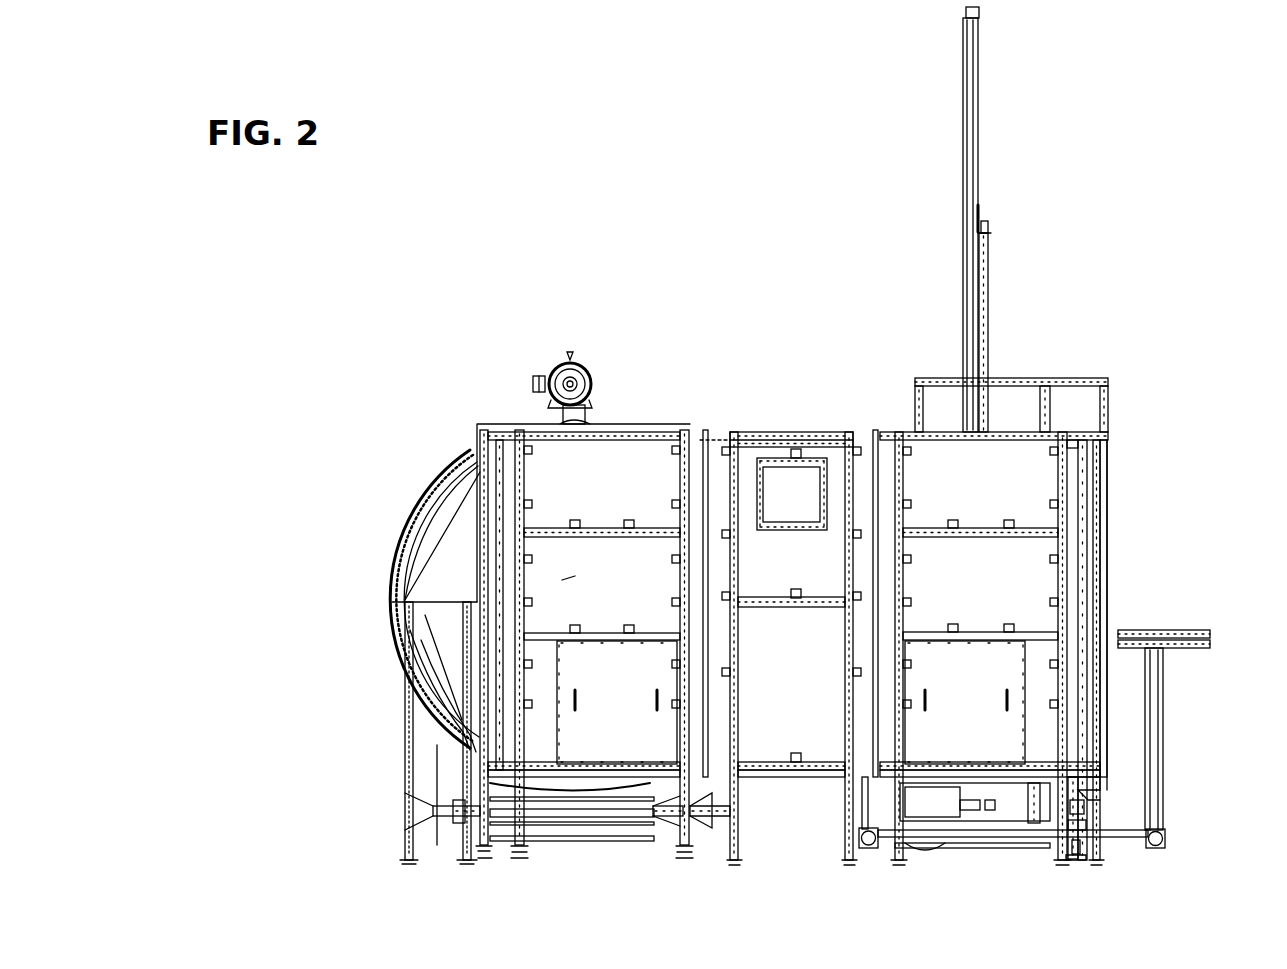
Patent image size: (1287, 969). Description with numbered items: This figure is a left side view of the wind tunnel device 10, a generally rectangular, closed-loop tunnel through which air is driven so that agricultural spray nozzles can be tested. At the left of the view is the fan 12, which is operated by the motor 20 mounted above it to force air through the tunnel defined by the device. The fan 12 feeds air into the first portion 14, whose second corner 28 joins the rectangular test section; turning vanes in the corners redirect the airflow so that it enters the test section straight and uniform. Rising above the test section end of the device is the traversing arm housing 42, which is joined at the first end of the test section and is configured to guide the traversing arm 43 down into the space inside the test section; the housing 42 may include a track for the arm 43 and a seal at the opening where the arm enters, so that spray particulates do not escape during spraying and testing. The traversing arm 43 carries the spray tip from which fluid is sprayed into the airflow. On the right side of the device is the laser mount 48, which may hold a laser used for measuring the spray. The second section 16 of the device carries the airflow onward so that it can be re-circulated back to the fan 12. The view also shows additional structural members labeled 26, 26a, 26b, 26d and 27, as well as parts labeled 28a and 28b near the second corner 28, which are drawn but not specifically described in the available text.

The wind tunnel device 10 is at (593, 203).
The fan 12 is at (386, 490).
The first portion 14 is at (789, 383).
The second section 16 is at (1135, 579).
The motor 20 is at (577, 362).
The left frame 26 is at (622, 433).
The inner column of left frame 26a is at (515, 433).
The lower sub-frame of left frame 26b is at (552, 765).
The diagonal brace 26d is at (587, 571).
The middle frame 27 is at (773, 752).
The second corner 28 is at (1086, 478).
The top box of right frame 28a is at (1052, 430).
The lower sub-frame of right frame 28b is at (990, 775).
The traversing arm housing 42 is at (975, 120).
The traversing arm 43 is at (988, 267).
The laser mount 48 is at (1200, 633).